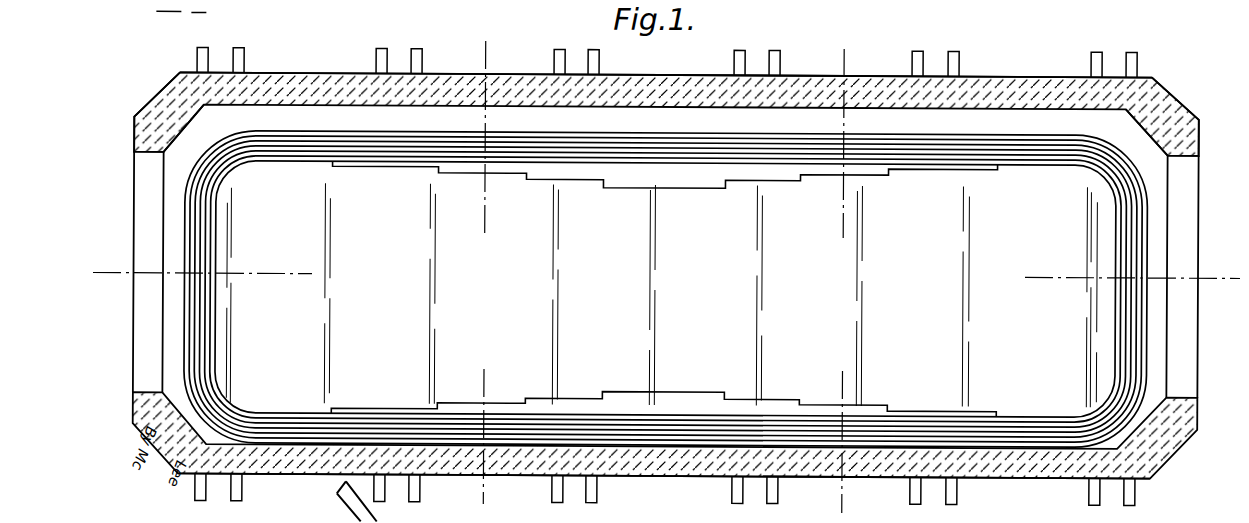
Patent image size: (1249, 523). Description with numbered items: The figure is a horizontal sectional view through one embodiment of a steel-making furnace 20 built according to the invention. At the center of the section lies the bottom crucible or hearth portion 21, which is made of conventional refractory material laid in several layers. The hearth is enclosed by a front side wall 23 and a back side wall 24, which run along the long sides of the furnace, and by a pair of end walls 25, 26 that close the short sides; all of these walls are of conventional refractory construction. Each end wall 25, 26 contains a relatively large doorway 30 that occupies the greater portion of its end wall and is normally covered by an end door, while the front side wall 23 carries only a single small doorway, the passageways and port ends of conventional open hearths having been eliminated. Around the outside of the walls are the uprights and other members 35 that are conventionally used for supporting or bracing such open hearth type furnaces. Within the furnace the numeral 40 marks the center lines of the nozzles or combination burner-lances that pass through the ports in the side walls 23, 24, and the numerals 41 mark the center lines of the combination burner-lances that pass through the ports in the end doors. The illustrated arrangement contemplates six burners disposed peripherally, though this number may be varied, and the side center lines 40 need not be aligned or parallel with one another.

The furnace 20 is at (1022, 74).
The bottom crucible or hearth portion 21 is at (660, 293).
The front side wall 23 is at (672, 75).
The back side wall 24 is at (630, 470).
The end wall 25 is at (1190, 148).
The end wall 26 is at (133, 140).
The doorway 30 is at (143, 219).
The uprights and other members 35 is at (898, 63).
The center lines of nozzles or combination burner-lances 40 is at (486, 185).
The center lines of combination burner-lances 41 is at (250, 278).